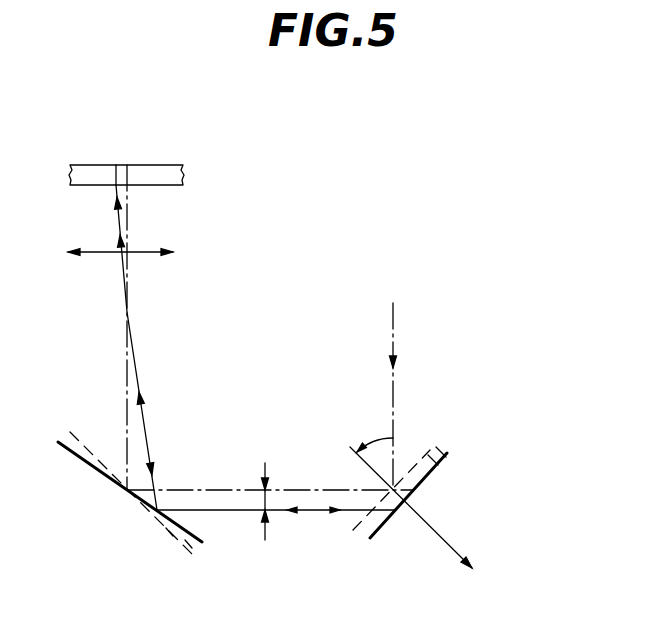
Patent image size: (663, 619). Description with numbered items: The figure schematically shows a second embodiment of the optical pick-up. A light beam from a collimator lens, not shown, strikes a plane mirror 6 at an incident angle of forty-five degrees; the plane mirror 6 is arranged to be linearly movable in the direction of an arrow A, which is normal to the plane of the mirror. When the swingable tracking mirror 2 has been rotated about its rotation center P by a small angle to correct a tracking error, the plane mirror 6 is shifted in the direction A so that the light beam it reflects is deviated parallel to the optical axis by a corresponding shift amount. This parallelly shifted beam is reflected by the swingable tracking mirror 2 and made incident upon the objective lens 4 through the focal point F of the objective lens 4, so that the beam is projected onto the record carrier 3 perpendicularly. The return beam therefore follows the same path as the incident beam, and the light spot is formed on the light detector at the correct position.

The swingable tracking mirror 2 is at (168, 533).
The optical information record carrier 3 is at (158, 172).
The objective lens 4 is at (152, 250).
The plane mirror 6 is at (430, 476).
The focal point F is at (130, 312).
The rotation center P is at (128, 492).
The shift direction A is at (480, 580).